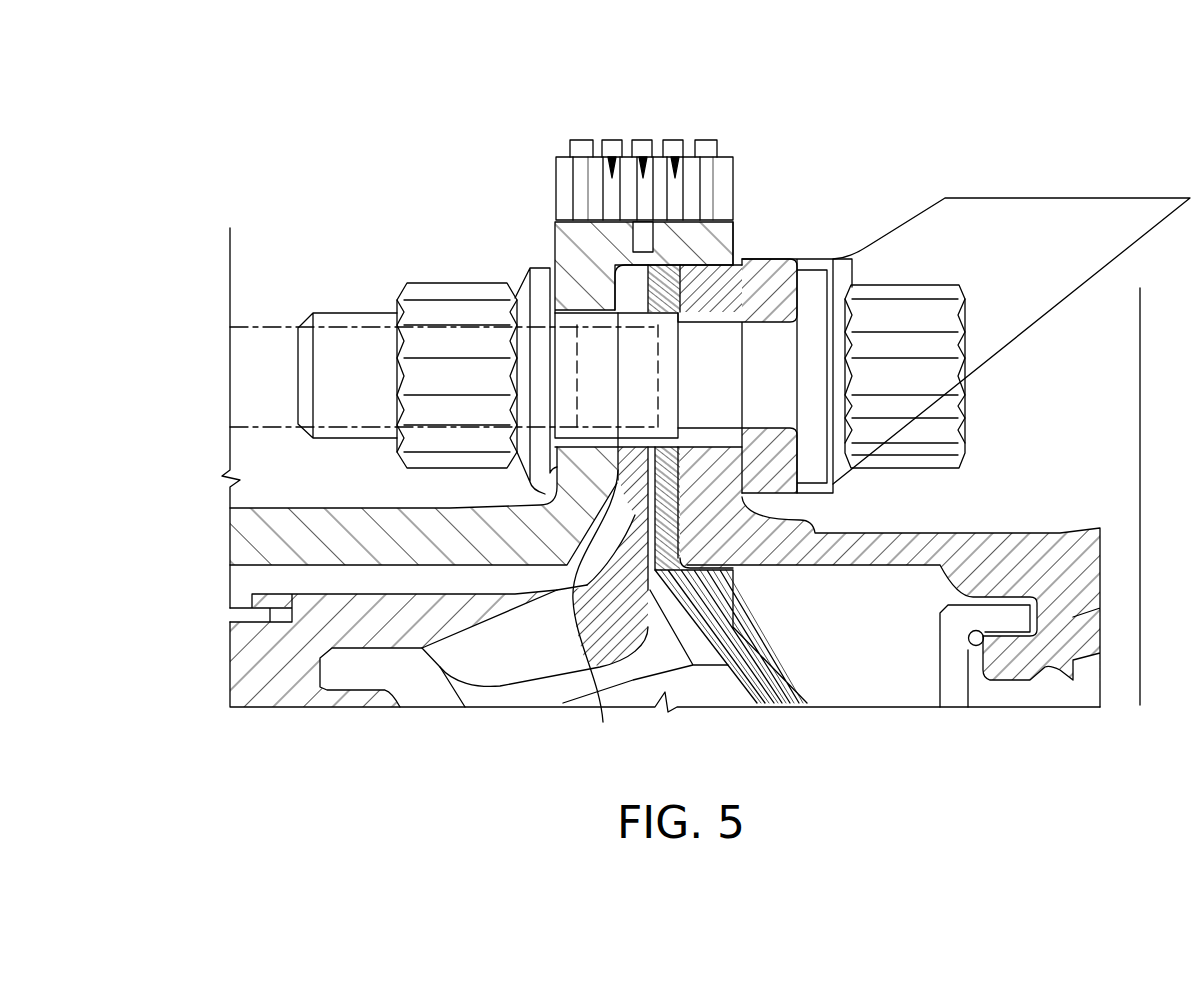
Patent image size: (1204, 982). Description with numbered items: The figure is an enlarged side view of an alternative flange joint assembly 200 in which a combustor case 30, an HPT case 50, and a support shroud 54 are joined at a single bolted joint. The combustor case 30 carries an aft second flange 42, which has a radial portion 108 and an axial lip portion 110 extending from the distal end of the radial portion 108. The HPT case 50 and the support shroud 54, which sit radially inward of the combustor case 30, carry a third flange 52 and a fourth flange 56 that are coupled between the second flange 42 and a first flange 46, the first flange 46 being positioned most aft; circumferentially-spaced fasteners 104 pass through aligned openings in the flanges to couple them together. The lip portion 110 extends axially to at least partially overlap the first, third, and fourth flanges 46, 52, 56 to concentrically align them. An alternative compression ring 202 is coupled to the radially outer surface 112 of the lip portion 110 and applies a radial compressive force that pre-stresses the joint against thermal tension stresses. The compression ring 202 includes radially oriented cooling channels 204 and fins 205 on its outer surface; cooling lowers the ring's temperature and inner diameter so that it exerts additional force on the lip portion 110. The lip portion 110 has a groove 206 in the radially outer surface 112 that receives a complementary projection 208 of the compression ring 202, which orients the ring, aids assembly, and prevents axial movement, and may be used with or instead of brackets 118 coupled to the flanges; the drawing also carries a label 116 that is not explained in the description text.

The flange joint assembly 200 is at (348, 113).
The compression ring 202 is at (626, 171).
The cooling channels 204 is at (675, 157).
The fins 205 is at (704, 140).
The groove 206 is at (627, 265).
The projection 208 is at (648, 233).
The radially outer surface 112 is at (572, 210).
The bearing carrier 116 is at (733, 227).
The axial lip portion 110 is at (715, 245).
The second flange 42 is at (582, 292).
The brackets 118 is at (998, 317).
The radial portion 108 is at (583, 460).
The fasteners 104 is at (947, 462).
The first flange 46 is at (795, 475).
The combustor case 30 is at (248, 538).
The HPT case 50 is at (265, 663).
The fourth flange 56 is at (673, 513).
The third flange 52 is at (603, 722).
The support shroud 54 is at (760, 687).